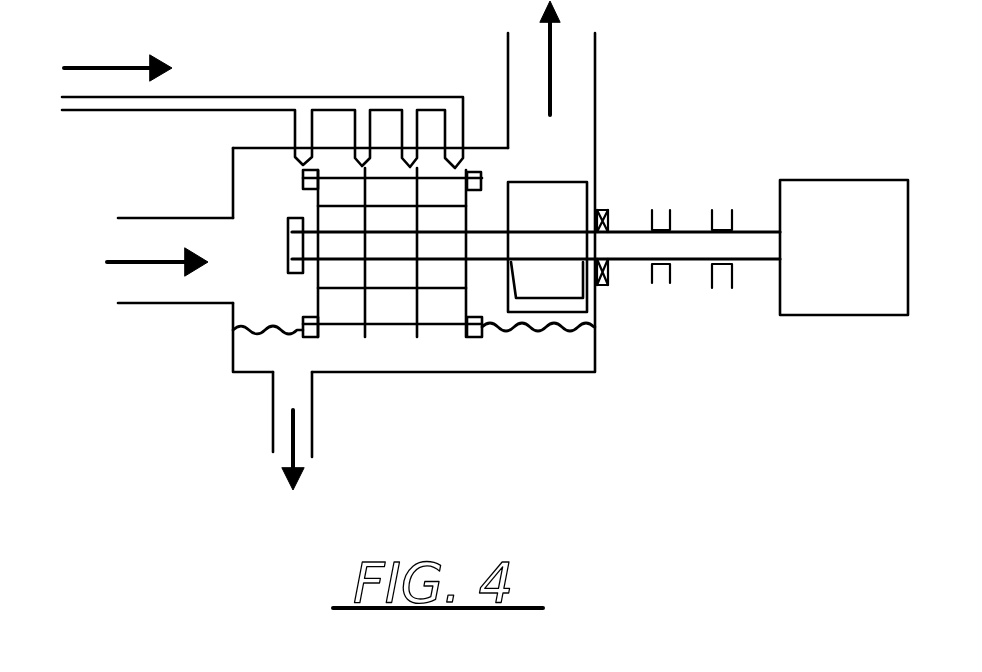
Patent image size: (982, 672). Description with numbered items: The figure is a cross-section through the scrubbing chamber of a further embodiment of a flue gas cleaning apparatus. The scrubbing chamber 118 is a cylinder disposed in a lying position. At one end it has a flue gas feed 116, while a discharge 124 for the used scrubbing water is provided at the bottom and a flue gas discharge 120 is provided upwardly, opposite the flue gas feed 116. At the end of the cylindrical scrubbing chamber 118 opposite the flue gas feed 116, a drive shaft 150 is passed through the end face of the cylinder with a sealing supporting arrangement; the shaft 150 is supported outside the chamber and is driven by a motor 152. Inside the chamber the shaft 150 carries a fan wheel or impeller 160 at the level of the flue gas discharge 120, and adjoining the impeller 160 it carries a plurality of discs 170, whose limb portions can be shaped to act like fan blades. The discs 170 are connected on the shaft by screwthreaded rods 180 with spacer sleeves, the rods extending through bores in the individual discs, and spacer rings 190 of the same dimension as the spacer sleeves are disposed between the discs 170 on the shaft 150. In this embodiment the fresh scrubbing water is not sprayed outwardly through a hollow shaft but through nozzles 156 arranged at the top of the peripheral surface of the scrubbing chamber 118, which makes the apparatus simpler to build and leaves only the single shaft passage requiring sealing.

The flue gas feed 116 is at (178, 218).
The scrubbing chamber 118 is at (575, 372).
The flue gas discharge 120 is at (572, 88).
The discharge 124 is at (313, 420).
The drive shaft 150 is at (668, 245).
The motor 152 is at (827, 220).
The nozzles 156 is at (302, 175).
The impeller 160 is at (565, 200).
The discs 170 is at (412, 328).
The screwthreaded rods 180 is at (437, 323).
The spacer rings 190 is at (352, 277).